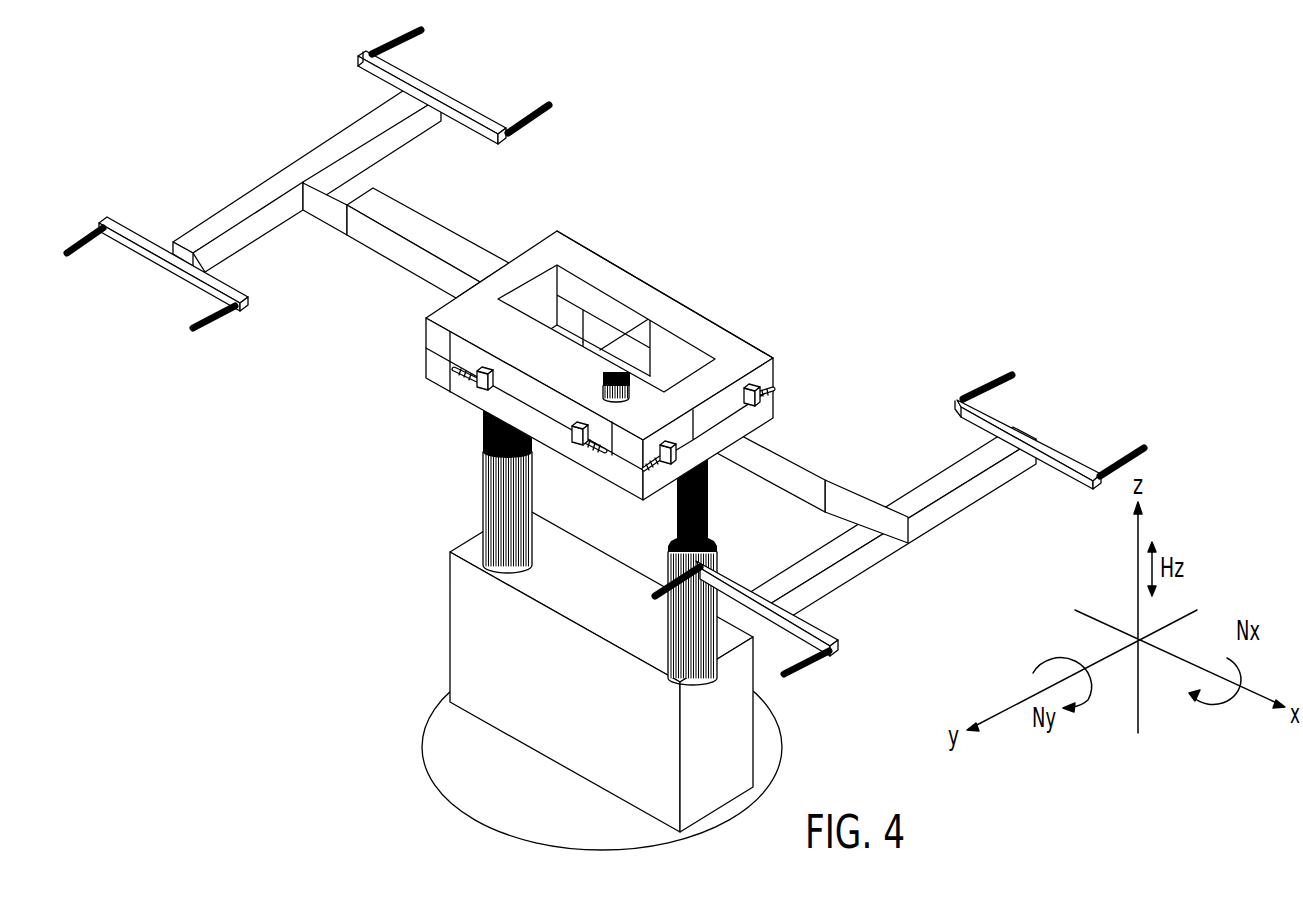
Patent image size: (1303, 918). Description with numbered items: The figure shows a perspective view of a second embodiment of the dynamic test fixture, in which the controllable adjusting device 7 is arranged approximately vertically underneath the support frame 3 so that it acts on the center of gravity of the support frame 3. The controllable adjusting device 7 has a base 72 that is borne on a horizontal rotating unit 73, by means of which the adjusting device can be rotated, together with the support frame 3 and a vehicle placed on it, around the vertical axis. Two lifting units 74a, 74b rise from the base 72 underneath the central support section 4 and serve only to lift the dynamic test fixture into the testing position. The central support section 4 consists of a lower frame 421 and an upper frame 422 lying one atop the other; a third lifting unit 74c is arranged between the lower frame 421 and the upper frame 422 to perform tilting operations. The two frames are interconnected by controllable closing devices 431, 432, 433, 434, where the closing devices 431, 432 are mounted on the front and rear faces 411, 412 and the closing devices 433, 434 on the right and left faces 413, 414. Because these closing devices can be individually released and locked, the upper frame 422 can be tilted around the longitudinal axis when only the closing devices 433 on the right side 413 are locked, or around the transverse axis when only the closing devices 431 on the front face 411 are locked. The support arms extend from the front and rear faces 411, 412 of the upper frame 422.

The support frame 3 is at (799, 200).
The central support section 4 is at (423, 382).
The controllable adjusting device 7 is at (364, 621).
The base 72 is at (467, 676).
The horizontal rotating unit 73 is at (422, 744).
The lifting unit 74a is at (483, 517).
The lifting unit 74b is at (668, 633).
The third lifting unit 74c is at (613, 400).
The front face 411 is at (770, 392).
The rear face 412 is at (483, 275).
The right face 413 is at (460, 392).
The left face 414 is at (597, 252).
The lower frame 421 is at (435, 367).
The upper frame 422 is at (427, 333).
The closing device 431 is at (695, 440).
The closing device 432 is at (537, 240).
The closing device 433 is at (575, 445).
The closing device 434 is at (690, 318).